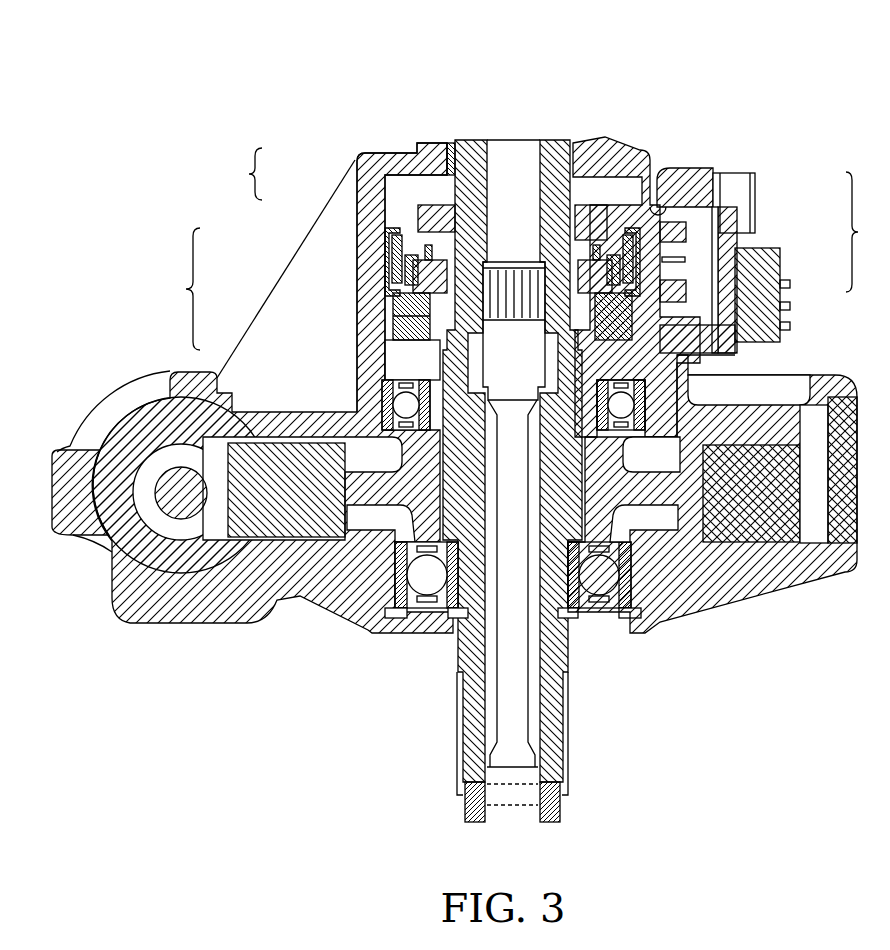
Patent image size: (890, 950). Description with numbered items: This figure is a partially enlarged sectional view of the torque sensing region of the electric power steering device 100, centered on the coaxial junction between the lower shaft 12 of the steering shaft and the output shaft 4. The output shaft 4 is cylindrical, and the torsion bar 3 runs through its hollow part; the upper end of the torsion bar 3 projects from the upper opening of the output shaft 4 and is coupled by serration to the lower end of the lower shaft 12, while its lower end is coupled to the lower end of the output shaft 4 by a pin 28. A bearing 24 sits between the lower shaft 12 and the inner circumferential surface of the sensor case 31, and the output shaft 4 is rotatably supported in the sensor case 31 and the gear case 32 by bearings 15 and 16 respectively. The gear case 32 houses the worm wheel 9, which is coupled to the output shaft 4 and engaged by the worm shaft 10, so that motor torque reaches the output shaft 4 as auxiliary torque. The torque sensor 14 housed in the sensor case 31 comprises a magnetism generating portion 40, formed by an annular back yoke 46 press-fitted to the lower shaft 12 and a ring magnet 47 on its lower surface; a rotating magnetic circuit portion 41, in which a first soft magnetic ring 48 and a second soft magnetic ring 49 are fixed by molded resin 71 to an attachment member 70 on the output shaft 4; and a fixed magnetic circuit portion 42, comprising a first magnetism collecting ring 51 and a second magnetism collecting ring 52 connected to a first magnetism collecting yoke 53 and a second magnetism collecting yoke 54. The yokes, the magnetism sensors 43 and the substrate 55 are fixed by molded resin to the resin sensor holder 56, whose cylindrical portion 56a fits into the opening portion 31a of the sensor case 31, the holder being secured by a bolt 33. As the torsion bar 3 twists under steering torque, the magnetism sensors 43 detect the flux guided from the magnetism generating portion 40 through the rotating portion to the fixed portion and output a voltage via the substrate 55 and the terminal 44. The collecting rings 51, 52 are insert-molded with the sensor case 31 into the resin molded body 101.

The electric power steering device 100 is at (561, 108).
The resin molded body 101 is at (356, 163).
The torsion bar 3 is at (520, 652).
The output shaft 4 is at (553, 700).
The worm wheel 9 is at (292, 598).
The worm shaft 10 is at (172, 490).
The lower shaft 12 is at (470, 145).
The torque sensor 14 is at (752, 173).
The bearing 15 is at (388, 616).
The bearing 16 is at (420, 614).
The bearing 24 is at (452, 147).
The pin 28 is at (562, 790).
The sensor case 31 is at (393, 153).
The opening portion 31a is at (656, 150).
The gear case 32 is at (757, 598).
The bolt 33 is at (745, 190).
The magnetism generating portion 40 is at (241, 174).
The rotating magnetic circuit portion 41 is at (179, 289).
The fixed magnetic circuit portion 42 is at (866, 232).
The magnetism sensors 43 is at (676, 258).
The terminal 44 is at (790, 312).
The back yoke 46 is at (383, 207).
The ring magnet 47 is at (383, 235).
The first soft magnetic ring 48 is at (383, 250).
The second soft magnetic ring 49 is at (383, 270).
The first magnetism collecting ring 51 is at (383, 240).
The second magnetism collecting ring 52 is at (385, 297).
The first magnetism collecting yoke 53 is at (725, 232).
The second magnetism collecting yoke 54 is at (752, 290).
The substrate 55 is at (742, 343).
The sensor holder 56 is at (713, 170).
The cylindrical portion 56a is at (680, 172).
The attachment member 70 is at (388, 335).
The molded resin 71 is at (388, 315).